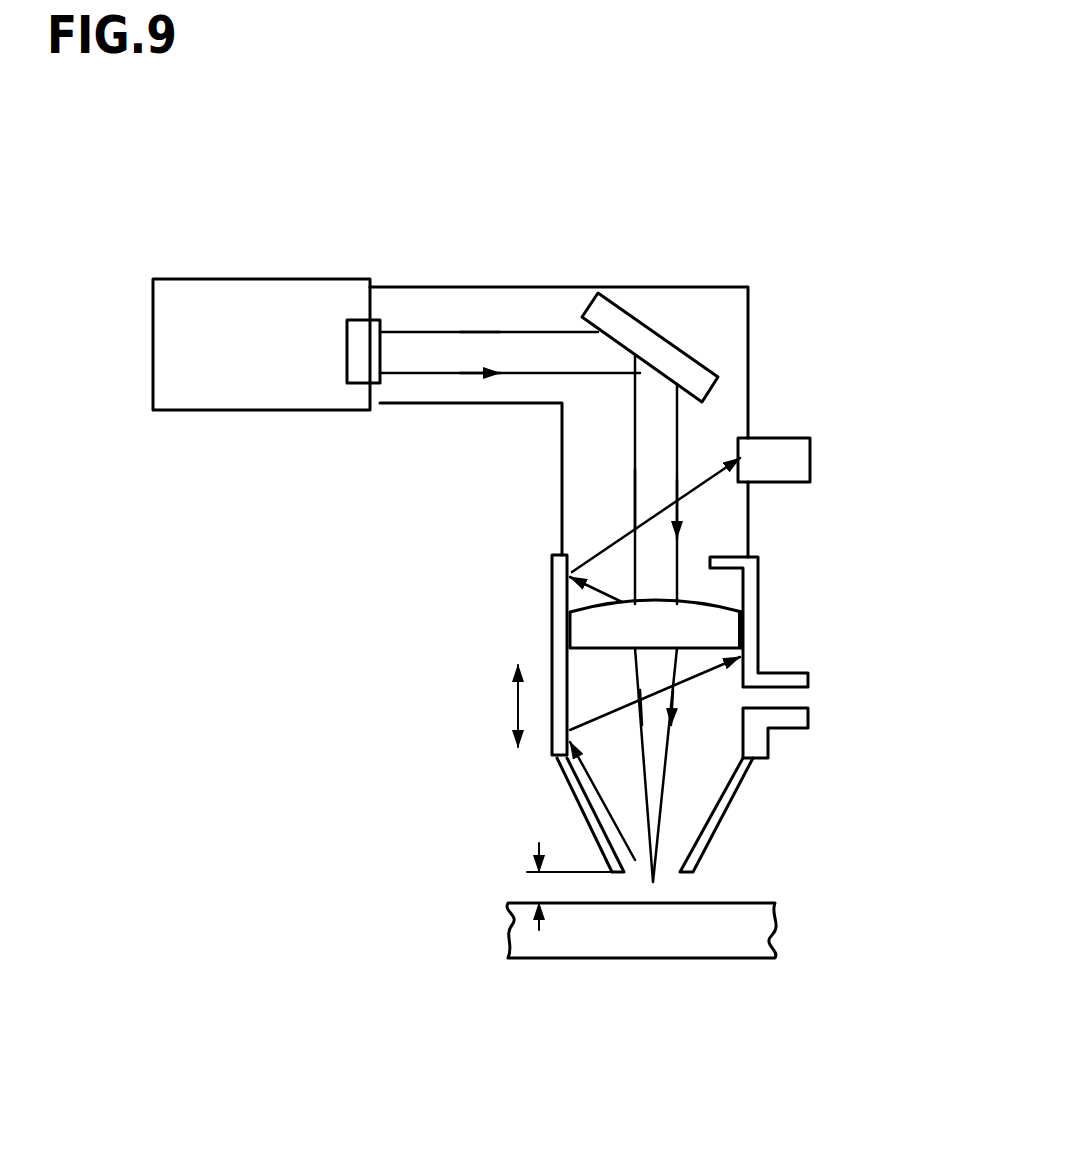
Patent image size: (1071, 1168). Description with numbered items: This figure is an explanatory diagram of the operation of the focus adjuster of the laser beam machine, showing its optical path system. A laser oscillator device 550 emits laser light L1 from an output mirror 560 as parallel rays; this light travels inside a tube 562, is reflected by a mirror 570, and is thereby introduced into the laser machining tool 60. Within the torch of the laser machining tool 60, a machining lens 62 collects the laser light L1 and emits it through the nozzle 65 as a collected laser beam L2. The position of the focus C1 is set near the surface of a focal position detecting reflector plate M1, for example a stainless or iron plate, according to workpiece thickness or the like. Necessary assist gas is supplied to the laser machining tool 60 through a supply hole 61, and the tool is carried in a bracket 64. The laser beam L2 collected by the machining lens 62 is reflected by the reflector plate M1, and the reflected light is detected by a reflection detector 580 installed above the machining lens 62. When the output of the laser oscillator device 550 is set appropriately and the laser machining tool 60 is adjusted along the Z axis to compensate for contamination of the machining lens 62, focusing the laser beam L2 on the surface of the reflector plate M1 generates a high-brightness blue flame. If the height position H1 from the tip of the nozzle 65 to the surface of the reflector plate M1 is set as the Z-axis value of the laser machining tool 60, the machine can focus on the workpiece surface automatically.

The laser oscillator device 550 is at (255, 279).
The output mirror 560 is at (365, 330).
The tube 562 is at (748, 318).
The mirror 570 is at (650, 335).
The reflection detector 580 is at (810, 462).
The laser machining tool 60 is at (802, 626).
The supply hole 61 is at (797, 680).
The machining lens 62 is at (528, 630).
The bracket 64 is at (750, 560).
The nozzle 65 is at (730, 812).
The laser light L1 is at (543, 332).
The laser beam L2 is at (663, 783).
The focus C1 is at (657, 887).
The height position H1 is at (553, 886).
The Z axis Z is at (501, 706).
The focal position detecting reflector plate M1 is at (757, 937).